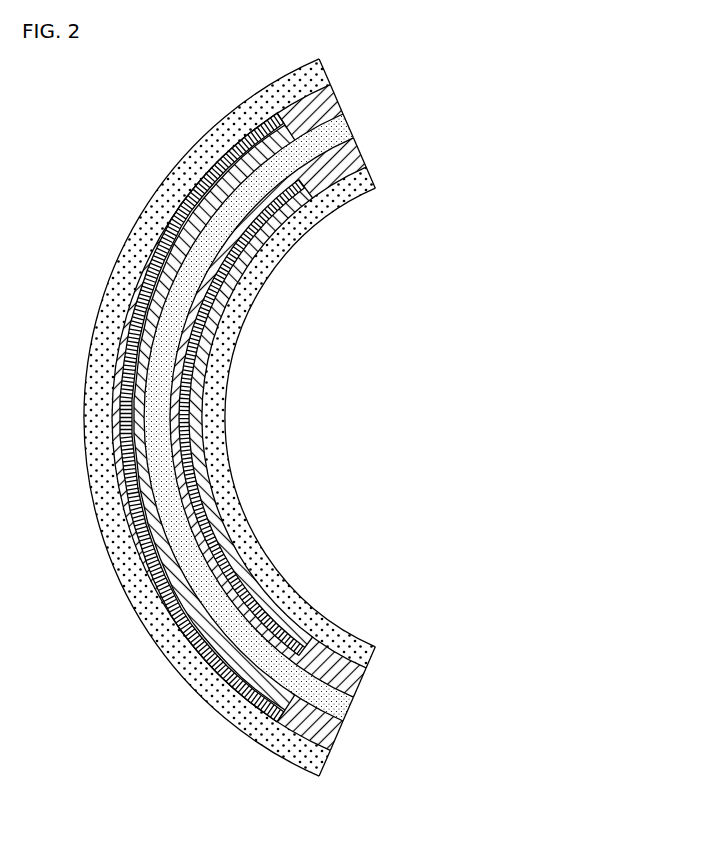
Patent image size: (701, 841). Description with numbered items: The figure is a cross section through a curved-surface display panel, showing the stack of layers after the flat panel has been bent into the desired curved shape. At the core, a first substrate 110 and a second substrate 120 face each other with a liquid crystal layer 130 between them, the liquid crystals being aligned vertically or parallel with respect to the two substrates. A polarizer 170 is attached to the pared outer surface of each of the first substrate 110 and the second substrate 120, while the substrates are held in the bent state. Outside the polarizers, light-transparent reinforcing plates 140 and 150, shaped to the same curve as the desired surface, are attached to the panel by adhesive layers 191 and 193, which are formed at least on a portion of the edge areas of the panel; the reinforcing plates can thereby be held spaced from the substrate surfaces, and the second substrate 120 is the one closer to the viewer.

The first substrate 110 is at (357, 682).
The second substrate 120 is at (340, 737).
The liquid crystal layer 130 is at (352, 709).
The reinforcing plate 140 is at (372, 657).
The reinforcing plate 150 is at (323, 760).
The polarizer 170 is at (217, 552).
The adhesive layer 191 is at (197, 385).
The adhesive layer 193 is at (140, 258).